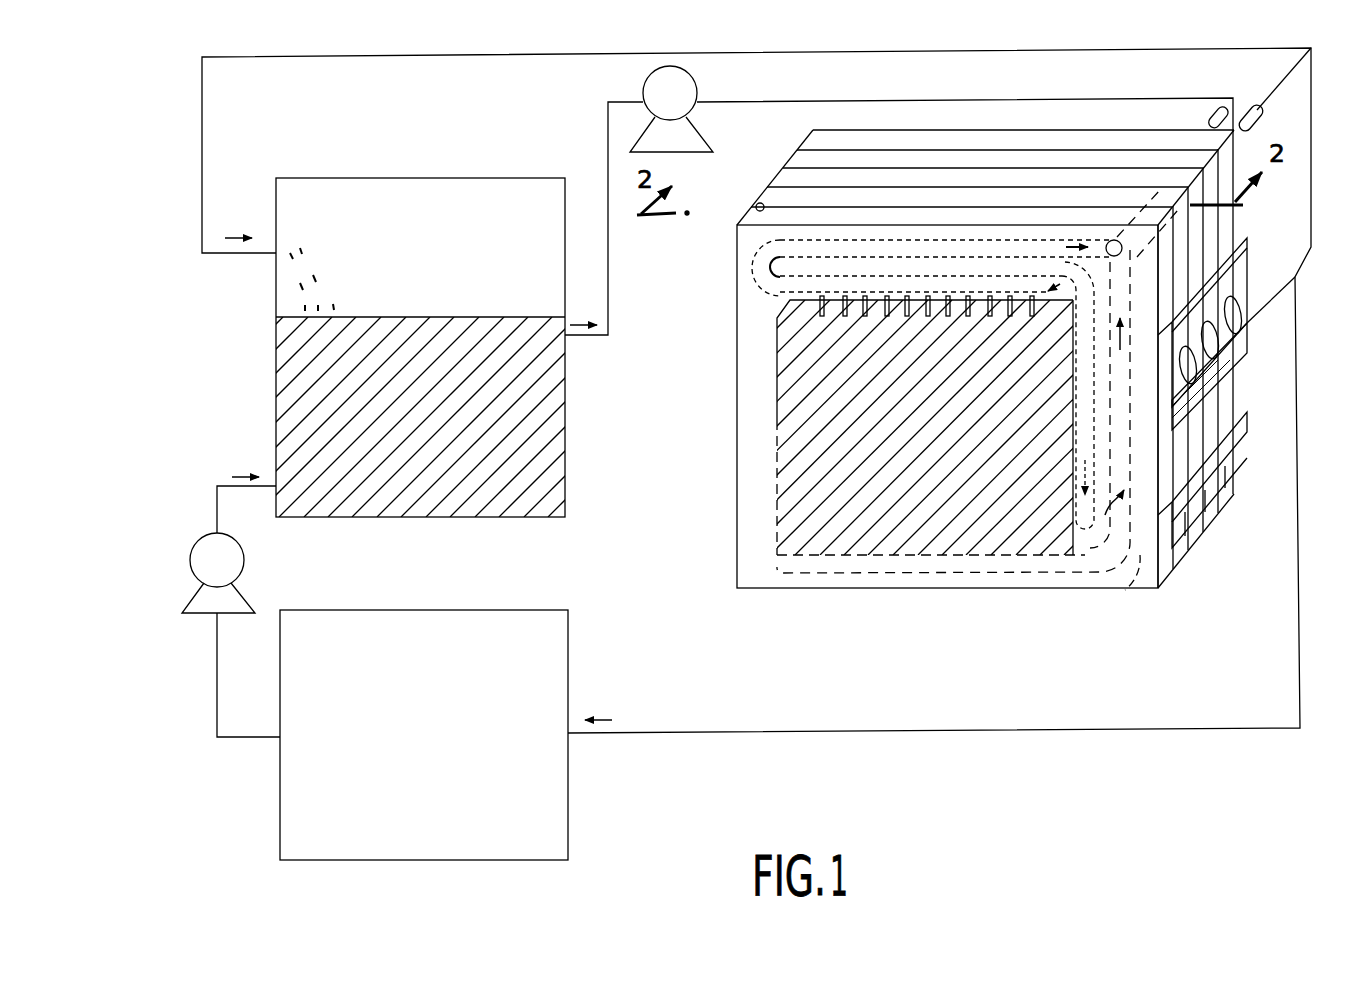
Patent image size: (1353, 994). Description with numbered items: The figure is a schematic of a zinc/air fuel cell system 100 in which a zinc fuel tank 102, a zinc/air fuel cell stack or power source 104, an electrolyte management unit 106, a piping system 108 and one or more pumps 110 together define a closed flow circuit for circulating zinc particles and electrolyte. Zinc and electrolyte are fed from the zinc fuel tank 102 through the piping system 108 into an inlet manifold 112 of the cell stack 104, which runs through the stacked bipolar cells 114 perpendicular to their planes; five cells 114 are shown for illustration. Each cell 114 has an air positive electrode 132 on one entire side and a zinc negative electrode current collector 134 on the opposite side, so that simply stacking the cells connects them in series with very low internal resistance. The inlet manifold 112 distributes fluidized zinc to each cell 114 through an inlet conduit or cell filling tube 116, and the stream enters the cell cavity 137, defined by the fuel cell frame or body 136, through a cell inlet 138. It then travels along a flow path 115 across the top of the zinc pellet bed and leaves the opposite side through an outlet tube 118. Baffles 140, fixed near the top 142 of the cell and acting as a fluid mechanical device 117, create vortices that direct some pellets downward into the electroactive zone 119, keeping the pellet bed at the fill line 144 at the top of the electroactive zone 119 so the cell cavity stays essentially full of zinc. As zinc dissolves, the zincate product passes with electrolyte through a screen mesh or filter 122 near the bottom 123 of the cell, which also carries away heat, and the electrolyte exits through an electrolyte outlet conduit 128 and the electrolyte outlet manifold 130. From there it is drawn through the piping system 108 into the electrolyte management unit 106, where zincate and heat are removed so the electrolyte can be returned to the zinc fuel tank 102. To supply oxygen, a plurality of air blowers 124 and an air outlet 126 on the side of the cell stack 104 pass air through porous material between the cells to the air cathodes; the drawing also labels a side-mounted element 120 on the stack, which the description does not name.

The zinc/air fuel cell system 100 is at (1056, 760).
The zinc fuel tank 102 is at (493, 152).
The zinc/air fuel cell stack or power source 104 is at (730, 613).
The electrolyte management unit 106 is at (577, 588).
The piping system 108 is at (322, 60).
The pump 110 is at (697, 125).
The inlet manifold 112 is at (1183, 147).
The bipolar cell 114 is at (773, 408).
The flow path 115 is at (873, 300).
The inlet conduit or cell filling tube 116 is at (742, 262).
The fluid mechanical device 117 is at (813, 320).
The outlet tube 118 is at (1062, 545).
The electroactive zone 119 is at (790, 436).
The bracket 120 is at (1240, 335).
The screen mesh or filter 122 is at (812, 560).
The bottom of the cell 123 is at (886, 575).
The air blower 124 is at (1245, 265).
The air outlet 126 is at (1250, 455).
The electrolyte outlet conduit 128 is at (1133, 598).
The electrolyte outlet manifold 130 is at (1254, 110).
The air positive electrode 132 is at (850, 128).
The zinc negative electrode current collector 134 is at (752, 214).
The fuel cell frame or body 136 is at (750, 462).
The cell cavity 137 is at (775, 520).
The cell inlet 138 is at (808, 288).
The baffle 140 is at (1040, 300).
The top of the cell 142 is at (937, 300).
The top of the electroactive zone or fill line 144 is at (742, 297).